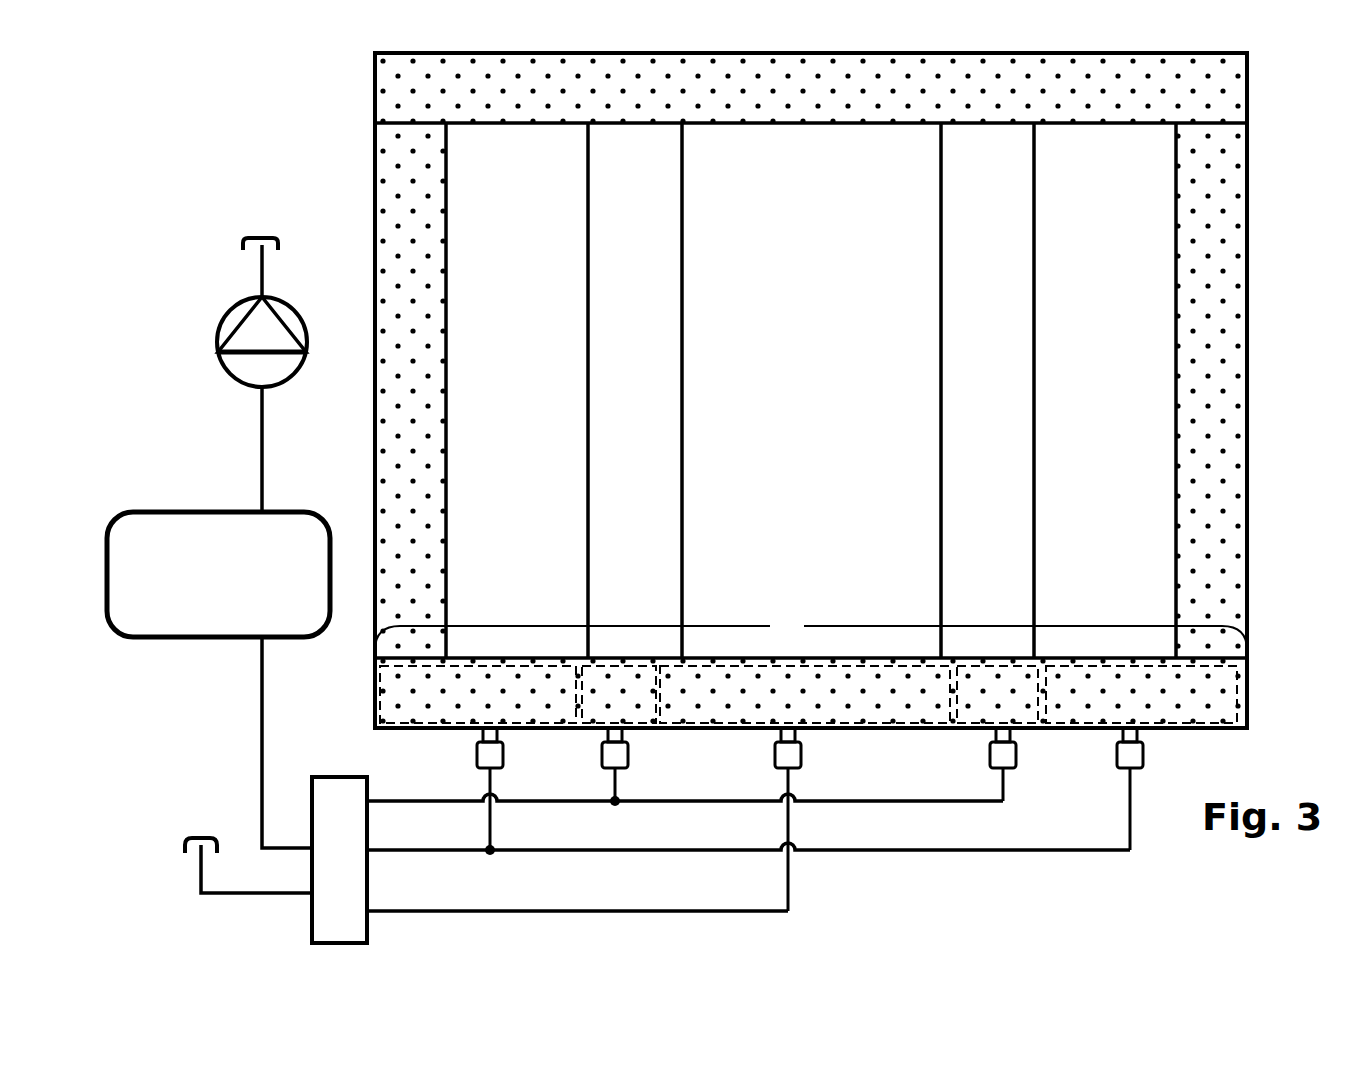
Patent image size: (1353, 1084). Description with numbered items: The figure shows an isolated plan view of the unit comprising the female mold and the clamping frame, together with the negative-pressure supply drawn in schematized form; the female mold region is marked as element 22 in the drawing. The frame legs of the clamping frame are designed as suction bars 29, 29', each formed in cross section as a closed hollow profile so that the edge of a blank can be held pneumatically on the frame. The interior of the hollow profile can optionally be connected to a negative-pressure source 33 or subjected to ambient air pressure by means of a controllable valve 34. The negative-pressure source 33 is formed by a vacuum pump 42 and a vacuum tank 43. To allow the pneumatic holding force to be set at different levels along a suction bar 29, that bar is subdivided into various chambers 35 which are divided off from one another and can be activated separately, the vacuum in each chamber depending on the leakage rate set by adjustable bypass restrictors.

The treatment chamber 22 is at (815, 457).
The suction bar 29 is at (811, 643).
The suction bar 29' is at (1299, 390).
The negative-pressure source 33 is at (118, 650).
The controllable valve 34 is at (355, 831).
The chambers 35 is at (605, 715).
The vacuum pump 42 is at (237, 335).
The vacuum tank 43 is at (200, 530).